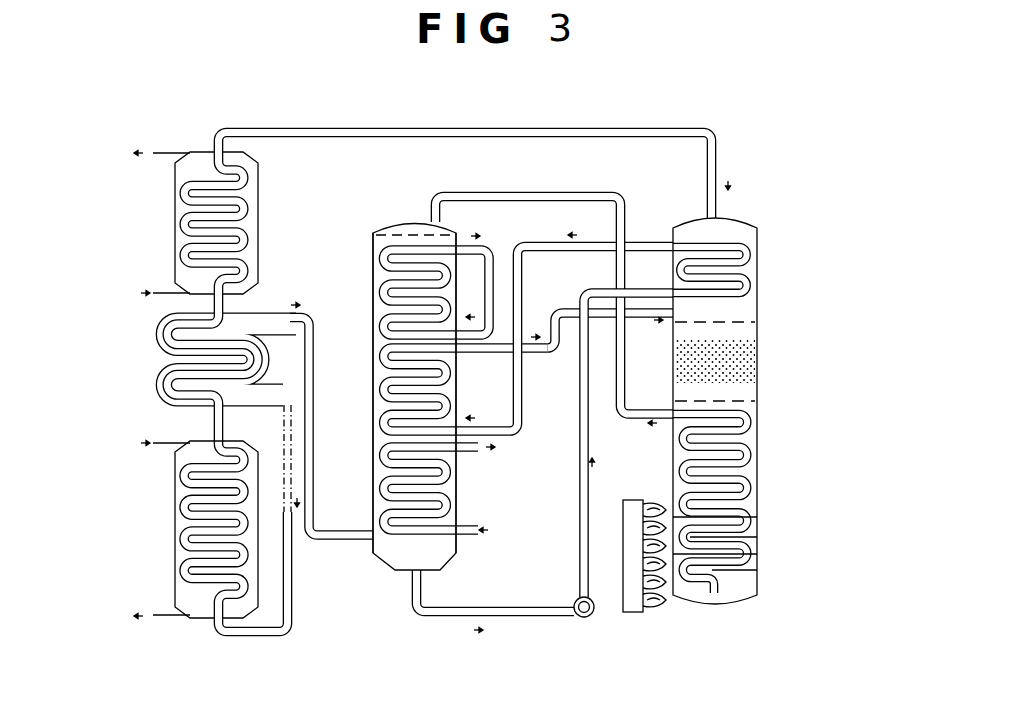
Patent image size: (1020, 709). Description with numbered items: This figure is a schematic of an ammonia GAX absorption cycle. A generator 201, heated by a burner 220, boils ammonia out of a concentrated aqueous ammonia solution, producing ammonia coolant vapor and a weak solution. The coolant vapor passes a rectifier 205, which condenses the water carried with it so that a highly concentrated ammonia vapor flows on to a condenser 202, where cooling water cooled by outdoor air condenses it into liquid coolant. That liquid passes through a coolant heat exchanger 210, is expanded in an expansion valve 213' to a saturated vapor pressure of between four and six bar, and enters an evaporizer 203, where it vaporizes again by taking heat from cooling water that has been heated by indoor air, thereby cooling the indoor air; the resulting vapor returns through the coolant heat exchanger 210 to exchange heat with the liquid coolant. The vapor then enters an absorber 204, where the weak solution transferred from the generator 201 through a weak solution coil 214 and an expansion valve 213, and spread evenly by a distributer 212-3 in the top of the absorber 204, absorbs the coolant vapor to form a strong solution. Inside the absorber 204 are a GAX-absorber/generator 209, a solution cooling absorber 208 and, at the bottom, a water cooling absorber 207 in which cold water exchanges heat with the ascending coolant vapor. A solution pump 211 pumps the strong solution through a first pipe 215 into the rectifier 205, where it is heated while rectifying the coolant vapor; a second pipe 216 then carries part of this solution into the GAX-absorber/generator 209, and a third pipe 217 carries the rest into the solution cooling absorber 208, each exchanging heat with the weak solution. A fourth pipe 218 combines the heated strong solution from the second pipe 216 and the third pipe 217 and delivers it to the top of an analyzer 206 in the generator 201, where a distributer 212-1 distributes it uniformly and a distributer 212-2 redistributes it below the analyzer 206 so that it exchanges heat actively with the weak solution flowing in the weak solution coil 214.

The generator 201 is at (757, 560).
The condenser 202 is at (175, 214).
The evaporizer 203 is at (172, 546).
The absorber 204 is at (392, 228).
The rectifier 205 is at (750, 253).
The analyzer 206 is at (759, 348).
The water cooling absorber 207 is at (383, 487).
The solution cooling absorber 208 is at (382, 382).
The GAX-absorber/generator 209 is at (380, 281).
The coolant heat exchanger 210 is at (158, 378).
The solution pump 211 is at (573, 621).
The distributer 212-1 is at (750, 319).
The distributer 212-2 is at (752, 400).
The distributer 212-3 is at (420, 234).
The expansion valve 213 is at (555, 282).
The expansion valve 213' is at (292, 518).
The weak solution coil 214 is at (760, 518).
The first pipe 215 is at (580, 515).
The second pipe 216 is at (503, 327).
The third pipe 217 is at (513, 432).
The fourth pipe 218 is at (555, 353).
The burner 220 is at (633, 618).